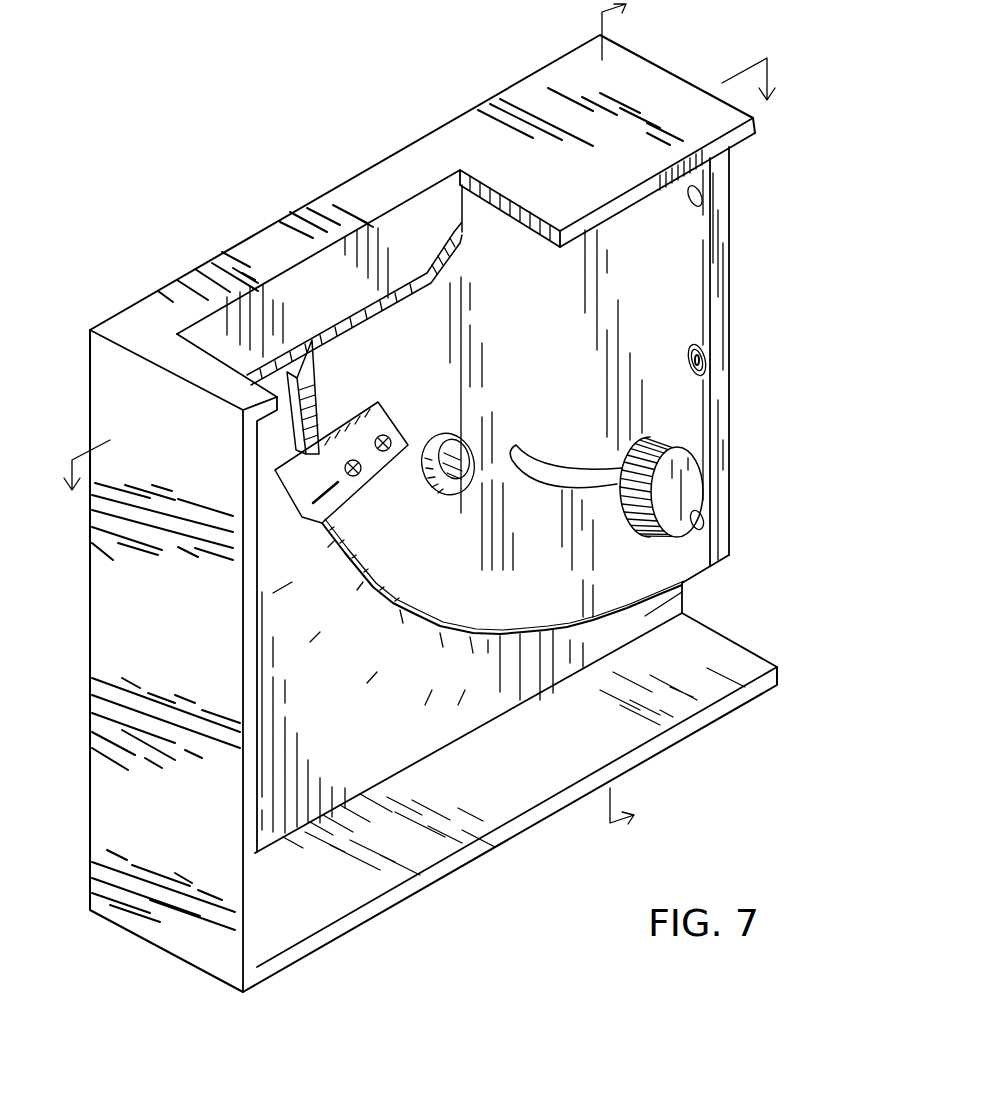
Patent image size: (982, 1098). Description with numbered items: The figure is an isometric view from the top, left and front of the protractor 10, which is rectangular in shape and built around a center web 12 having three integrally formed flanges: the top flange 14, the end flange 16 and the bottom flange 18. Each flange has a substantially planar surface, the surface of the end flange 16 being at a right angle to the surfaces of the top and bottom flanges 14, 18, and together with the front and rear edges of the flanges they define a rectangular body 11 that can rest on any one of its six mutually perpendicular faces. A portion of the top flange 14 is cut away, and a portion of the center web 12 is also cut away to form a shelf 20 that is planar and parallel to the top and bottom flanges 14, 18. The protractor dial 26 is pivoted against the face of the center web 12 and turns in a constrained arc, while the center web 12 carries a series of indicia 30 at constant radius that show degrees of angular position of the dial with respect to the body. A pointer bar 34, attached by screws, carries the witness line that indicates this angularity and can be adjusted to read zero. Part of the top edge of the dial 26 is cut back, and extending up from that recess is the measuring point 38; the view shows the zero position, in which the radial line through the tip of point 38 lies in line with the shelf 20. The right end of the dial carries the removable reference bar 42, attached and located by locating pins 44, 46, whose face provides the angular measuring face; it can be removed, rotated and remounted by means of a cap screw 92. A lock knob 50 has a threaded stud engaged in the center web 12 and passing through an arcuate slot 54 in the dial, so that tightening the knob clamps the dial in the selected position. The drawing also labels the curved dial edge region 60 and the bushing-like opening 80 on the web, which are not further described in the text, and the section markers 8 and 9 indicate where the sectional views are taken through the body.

The section line 8- 8 is at (418, 289).
The section line 9- 9 is at (629, 412).
The protractor 10 is at (125, 260).
The rectangular body 11 is at (227, 235).
The center web 12 is at (682, 588).
The top flange 14 is at (540, 95).
The end flange 16 is at (98, 603).
The bottom flange 18 is at (405, 900).
The shelf 20 is at (408, 285).
The protractor dial 26 is at (702, 326).
The indicia 30 is at (367, 662).
The pointer bar 34 is at (360, 410).
The measuring point 38 is at (310, 333).
The reference bar 42 is at (730, 407).
The locating pin 44 is at (697, 205).
The locating pin 46 is at (699, 523).
The lock knob 50 is at (698, 447).
The arcuate slot 54 is at (552, 461).
The dial scale 60 is at (466, 604).
The pivot bushing 80 is at (425, 457).
The cap screw 92 is at (689, 358).